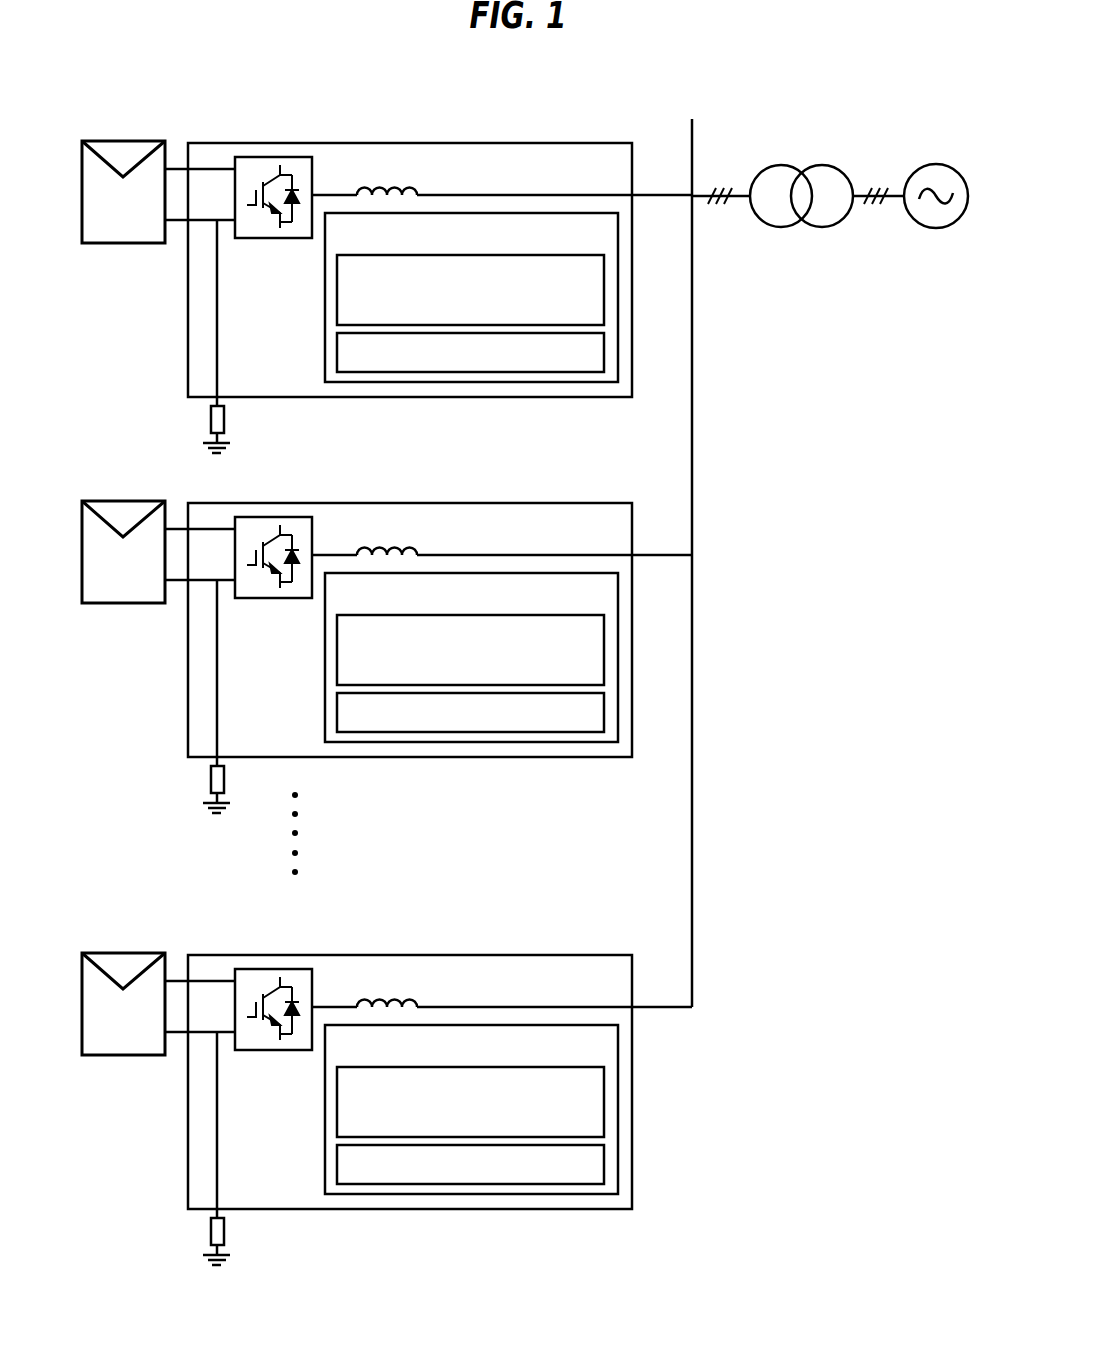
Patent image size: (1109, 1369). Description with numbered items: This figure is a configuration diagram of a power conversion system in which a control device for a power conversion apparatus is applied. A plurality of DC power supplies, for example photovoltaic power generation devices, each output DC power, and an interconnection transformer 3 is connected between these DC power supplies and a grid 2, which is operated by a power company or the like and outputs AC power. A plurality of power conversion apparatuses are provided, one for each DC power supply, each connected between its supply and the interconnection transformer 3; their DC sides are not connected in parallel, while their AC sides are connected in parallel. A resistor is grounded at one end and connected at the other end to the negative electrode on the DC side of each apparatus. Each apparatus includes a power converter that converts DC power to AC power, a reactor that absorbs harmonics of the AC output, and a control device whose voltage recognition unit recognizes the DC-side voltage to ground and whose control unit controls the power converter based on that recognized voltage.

The grid 2 is at (936, 165).
The interconnection transformer 3 is at (782, 166).